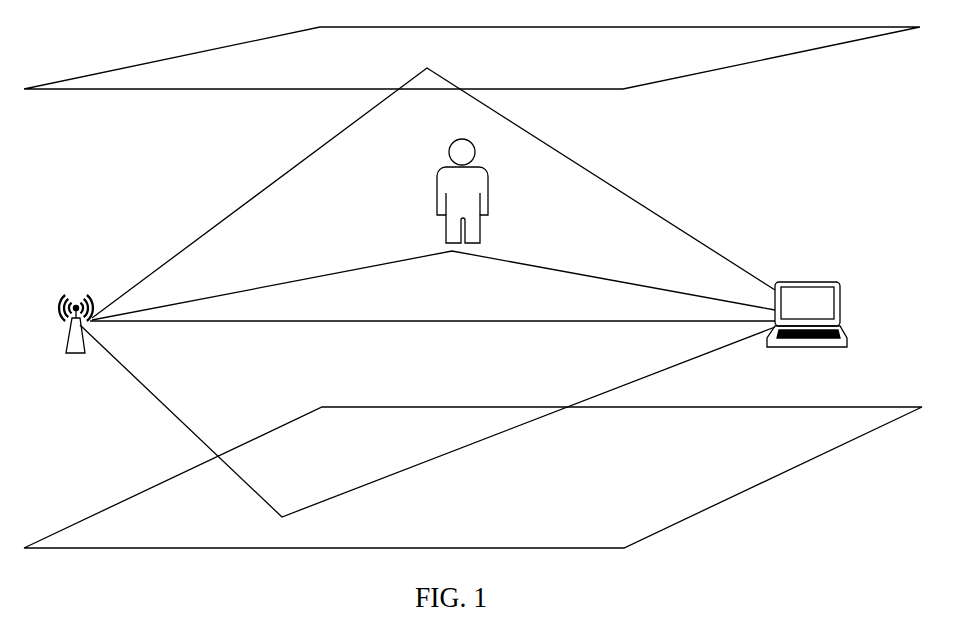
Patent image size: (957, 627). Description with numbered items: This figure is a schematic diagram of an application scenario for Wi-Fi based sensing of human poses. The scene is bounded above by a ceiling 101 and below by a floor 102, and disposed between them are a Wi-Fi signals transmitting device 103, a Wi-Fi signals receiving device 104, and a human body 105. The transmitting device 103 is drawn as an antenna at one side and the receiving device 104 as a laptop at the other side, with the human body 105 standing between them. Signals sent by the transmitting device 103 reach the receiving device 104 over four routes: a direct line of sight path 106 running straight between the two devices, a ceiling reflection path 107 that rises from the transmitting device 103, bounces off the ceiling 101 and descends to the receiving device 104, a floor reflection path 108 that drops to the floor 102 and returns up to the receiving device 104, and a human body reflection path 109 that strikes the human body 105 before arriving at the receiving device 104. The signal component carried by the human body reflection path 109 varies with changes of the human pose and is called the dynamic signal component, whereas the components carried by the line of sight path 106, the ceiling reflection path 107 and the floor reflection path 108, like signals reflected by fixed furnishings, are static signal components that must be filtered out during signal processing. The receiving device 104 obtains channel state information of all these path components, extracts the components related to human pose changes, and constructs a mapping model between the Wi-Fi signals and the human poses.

The ceiling 101 is at (472, 59).
The floor 102 is at (473, 477).
The Wi-Fi signals transmitting device 103 is at (49, 337).
The Wi-Fi signals receiving device 104 is at (833, 329).
The human body 105 is at (496, 191).
The line of sight (LOS) path 106 is at (432, 337).
The ceiling reflection path 107 is at (433, 193).
The floor reflection path 108 is at (427, 421).
The human body reflection path 109 is at (433, 281).